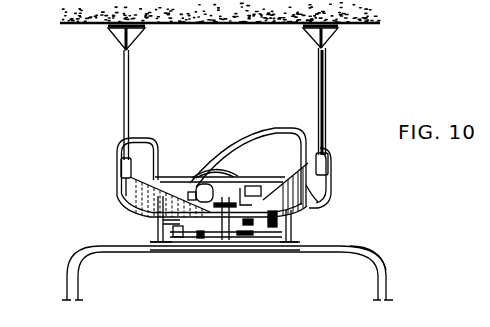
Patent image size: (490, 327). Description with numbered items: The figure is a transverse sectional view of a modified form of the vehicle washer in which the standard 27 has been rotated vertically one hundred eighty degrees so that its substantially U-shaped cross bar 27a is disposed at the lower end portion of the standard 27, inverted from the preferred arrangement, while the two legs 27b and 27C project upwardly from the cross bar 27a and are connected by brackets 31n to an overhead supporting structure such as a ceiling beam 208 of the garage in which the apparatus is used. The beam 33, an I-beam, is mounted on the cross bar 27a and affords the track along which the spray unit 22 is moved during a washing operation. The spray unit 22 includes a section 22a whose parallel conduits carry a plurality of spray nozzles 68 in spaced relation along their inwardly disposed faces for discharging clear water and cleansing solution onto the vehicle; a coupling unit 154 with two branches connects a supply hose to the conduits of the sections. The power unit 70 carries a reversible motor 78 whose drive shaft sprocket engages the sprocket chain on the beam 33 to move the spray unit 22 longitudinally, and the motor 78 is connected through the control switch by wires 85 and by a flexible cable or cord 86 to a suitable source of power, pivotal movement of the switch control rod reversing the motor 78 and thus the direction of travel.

The ceiling beam 208 is at (286, 8).
The brackets 31n is at (138, 32).
The vertical leg 27C is at (131, 99).
The vertical leg 27b is at (327, 94).
The standard 27 is at (303, 216).
The flexible cable 86 is at (303, 126).
The wires 85 is at (240, 170).
The reversible motor 78 is at (196, 186).
The beam 33 is at (236, 212).
The coupling unit 154 is at (158, 226).
The power unit 70 is at (288, 224).
The spray nozzles 68 is at (353, 253).
The spray unit 22 is at (393, 282).
The section of spray unit 22a is at (387, 257).
The cross bar 27a is at (329, 203).